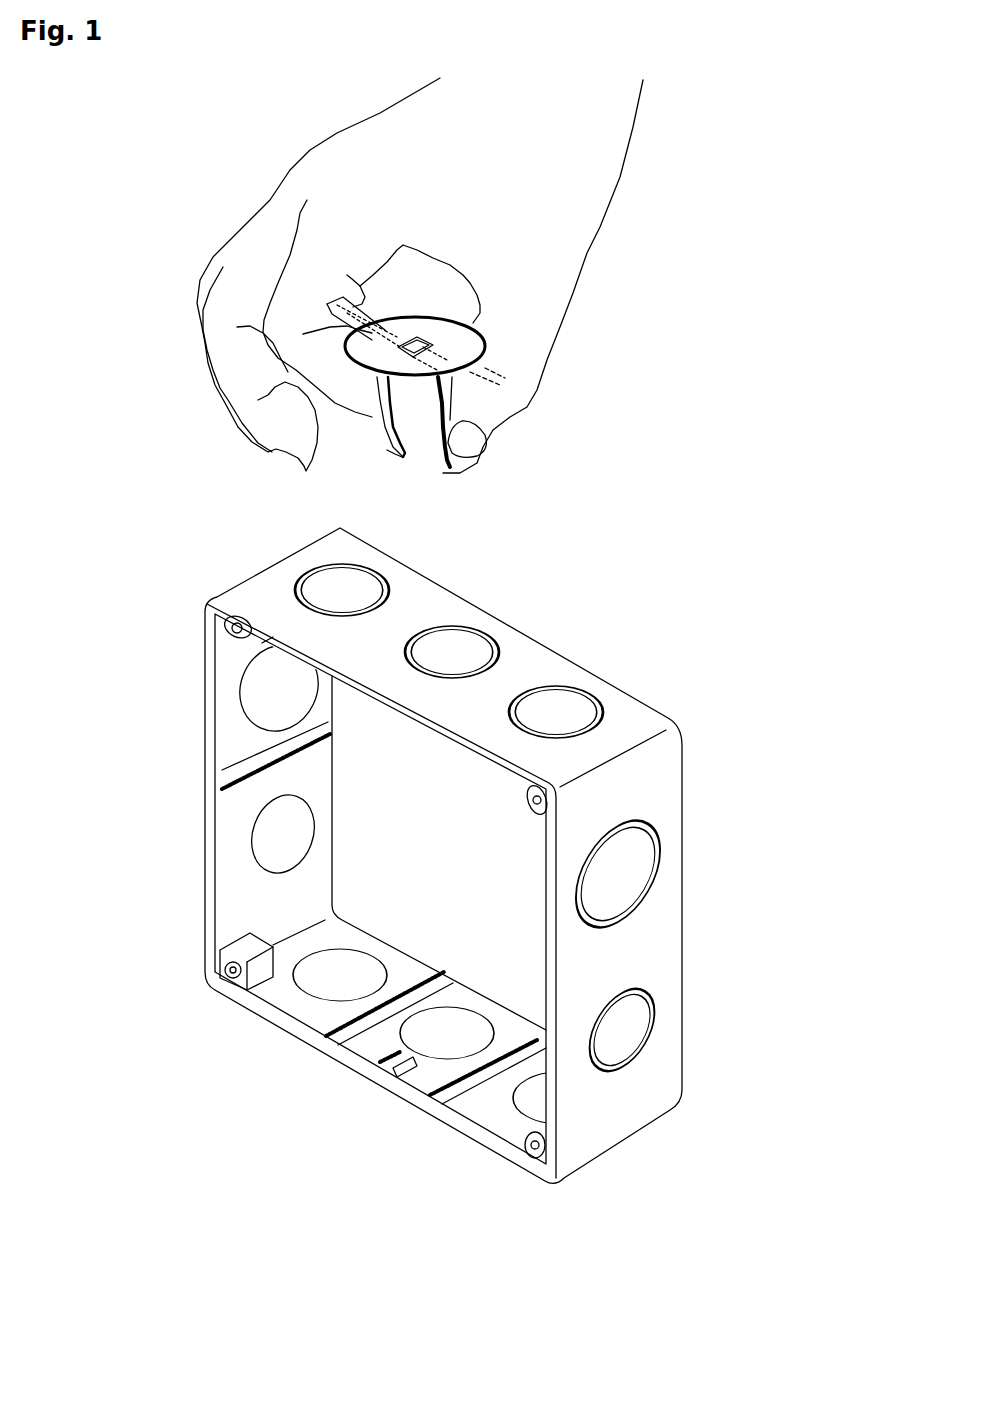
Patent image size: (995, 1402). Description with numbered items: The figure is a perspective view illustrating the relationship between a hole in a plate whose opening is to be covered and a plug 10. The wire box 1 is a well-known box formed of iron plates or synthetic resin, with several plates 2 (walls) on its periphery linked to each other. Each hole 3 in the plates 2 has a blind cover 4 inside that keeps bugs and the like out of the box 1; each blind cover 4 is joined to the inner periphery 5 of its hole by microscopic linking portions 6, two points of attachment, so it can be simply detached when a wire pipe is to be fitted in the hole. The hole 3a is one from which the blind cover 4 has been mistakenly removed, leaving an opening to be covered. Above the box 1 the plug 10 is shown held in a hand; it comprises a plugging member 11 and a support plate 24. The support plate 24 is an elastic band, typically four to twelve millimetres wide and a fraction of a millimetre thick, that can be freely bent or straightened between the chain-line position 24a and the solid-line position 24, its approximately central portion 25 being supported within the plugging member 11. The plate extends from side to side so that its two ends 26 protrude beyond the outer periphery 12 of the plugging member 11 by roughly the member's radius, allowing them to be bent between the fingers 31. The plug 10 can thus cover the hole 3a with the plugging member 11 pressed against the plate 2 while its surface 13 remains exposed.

The wire box 1 is at (696, 550).
The plate 2 is at (451, 927).
The hole 3 is at (451, 823).
The hole 3a is at (502, 619).
The blind cover 4 is at (451, 792).
The inner periphery 5 is at (570, 877).
The linking portion 6 is at (457, 700).
The plug 10 is at (588, 336).
The plugging member 11 is at (533, 301).
The outer periphery 12 is at (522, 345).
The surface 13 is at (565, 258).
The support plate 24 is at (369, 414).
The position of support plate 24a is at (455, 285).
The portion 25 is at (334, 213).
The end 26 is at (406, 455).
The finger 31 is at (384, 411).